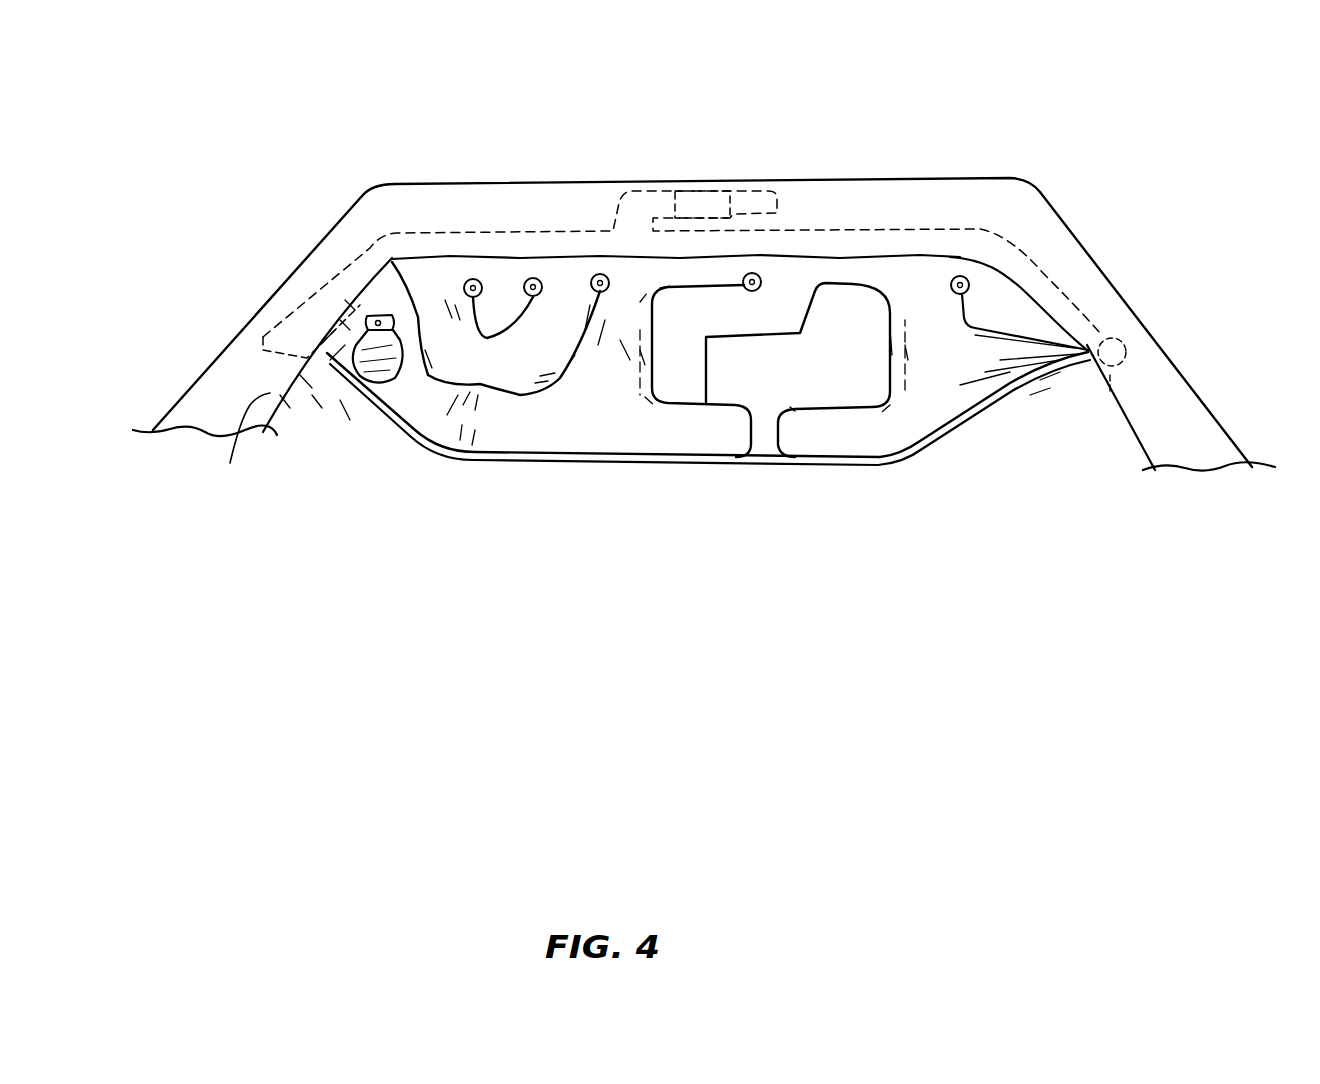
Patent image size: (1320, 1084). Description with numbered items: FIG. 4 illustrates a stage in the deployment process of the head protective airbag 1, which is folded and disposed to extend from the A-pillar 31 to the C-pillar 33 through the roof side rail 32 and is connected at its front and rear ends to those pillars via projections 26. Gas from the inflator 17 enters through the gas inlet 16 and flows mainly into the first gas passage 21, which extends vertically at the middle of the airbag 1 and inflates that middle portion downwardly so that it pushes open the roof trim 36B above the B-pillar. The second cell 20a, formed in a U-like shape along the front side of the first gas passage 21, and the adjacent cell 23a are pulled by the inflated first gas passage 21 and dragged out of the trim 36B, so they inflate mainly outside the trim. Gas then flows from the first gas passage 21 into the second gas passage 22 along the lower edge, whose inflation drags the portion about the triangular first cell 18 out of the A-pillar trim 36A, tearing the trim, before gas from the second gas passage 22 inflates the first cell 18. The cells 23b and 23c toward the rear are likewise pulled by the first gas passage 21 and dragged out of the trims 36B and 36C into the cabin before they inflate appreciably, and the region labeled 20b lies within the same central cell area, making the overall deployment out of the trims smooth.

The head protective airbag 1 is at (918, 476).
The gas inlet 16 is at (640, 200).
The gas generator (inflator) 17 is at (770, 192).
The first cell 18 is at (345, 375).
The second cell 20a is at (572, 371).
The second tear line portion 20b is at (502, 303).
The first gas passage 21 is at (627, 383).
The second gas passage 22 is at (500, 440).
The cell 23a is at (665, 328).
The cell 23b is at (962, 381).
The cell 23c is at (1027, 325).
The projection 26 is at (287, 390).
The A-pillar 31 is at (208, 354).
The roof side rail 32 is at (970, 172).
The C-pillar 33 is at (1205, 385).
The trim of the A-pillar 36A is at (227, 450).
The roof trim 36B is at (437, 250).
The trim 36C is at (1137, 413).